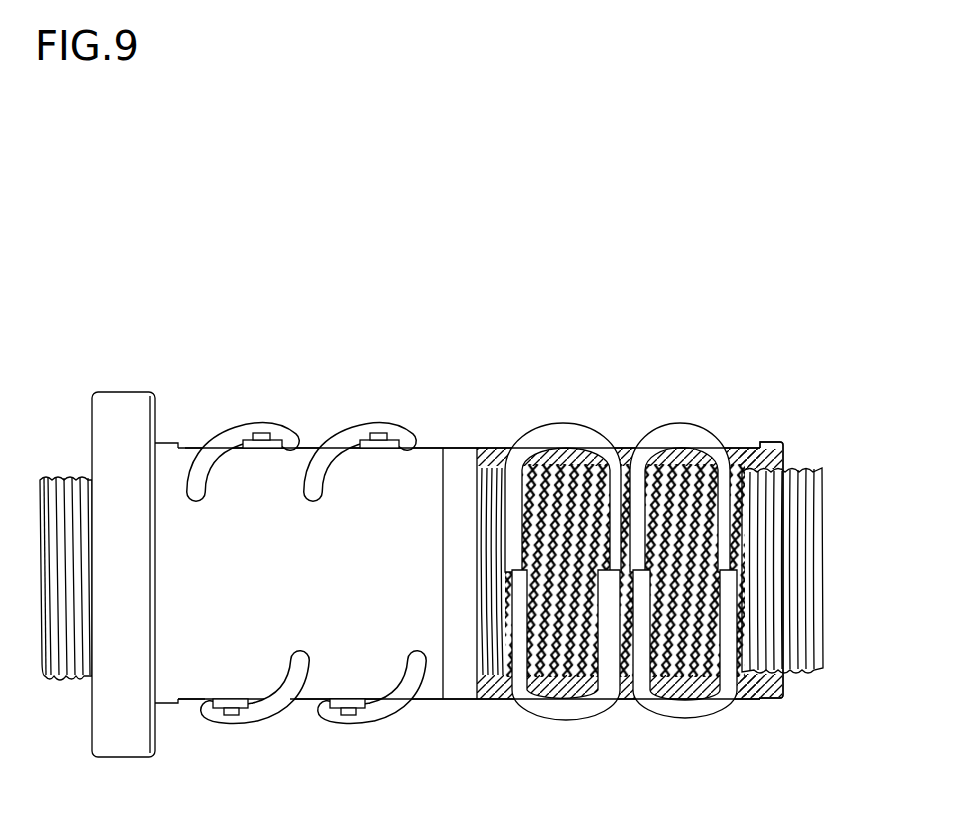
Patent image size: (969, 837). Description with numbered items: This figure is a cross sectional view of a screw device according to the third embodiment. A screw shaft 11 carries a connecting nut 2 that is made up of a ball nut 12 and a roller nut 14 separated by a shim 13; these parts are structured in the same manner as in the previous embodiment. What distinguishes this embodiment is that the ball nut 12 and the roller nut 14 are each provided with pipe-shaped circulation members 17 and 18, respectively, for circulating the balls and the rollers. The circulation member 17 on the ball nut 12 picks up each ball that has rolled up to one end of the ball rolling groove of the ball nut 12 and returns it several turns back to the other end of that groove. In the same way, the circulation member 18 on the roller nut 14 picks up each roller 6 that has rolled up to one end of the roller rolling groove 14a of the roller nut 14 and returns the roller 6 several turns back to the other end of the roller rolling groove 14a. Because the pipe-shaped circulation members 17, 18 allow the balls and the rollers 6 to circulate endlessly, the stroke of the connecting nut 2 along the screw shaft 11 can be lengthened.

The connecting nut 2 is at (621, 418).
The roller 6 is at (752, 533).
The screw shaft 11 is at (812, 663).
The ball nut 12 is at (425, 468).
The shim 13 is at (463, 455).
The roller nut 14 is at (770, 440).
The roller rolling groove 14a is at (785, 470).
The circulation member 17 is at (232, 437).
The circulation member 18 is at (555, 432).